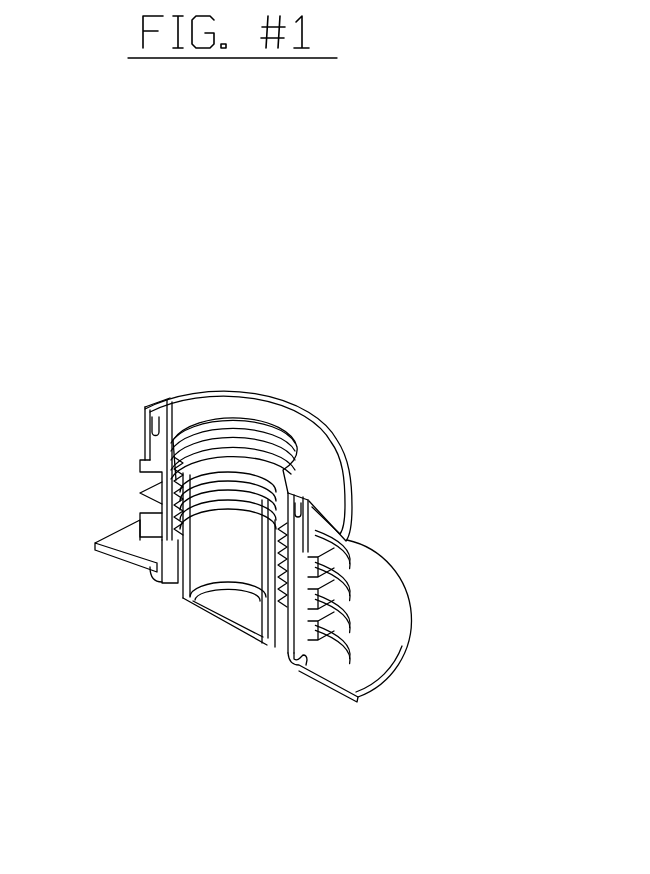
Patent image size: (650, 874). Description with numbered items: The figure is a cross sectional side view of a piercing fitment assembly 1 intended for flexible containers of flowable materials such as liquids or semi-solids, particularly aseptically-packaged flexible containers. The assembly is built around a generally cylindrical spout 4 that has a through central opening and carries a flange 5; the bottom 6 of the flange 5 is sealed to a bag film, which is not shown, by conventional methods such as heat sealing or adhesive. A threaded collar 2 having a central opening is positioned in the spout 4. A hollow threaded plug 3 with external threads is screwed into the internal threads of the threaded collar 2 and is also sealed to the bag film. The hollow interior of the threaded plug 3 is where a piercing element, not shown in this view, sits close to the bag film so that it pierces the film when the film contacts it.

The piercing fitment assembly 1 is at (373, 250).
The threaded collar 2 is at (452, 453).
The hollow threaded plug 3 is at (180, 490).
The spout 4 is at (150, 503).
The flange 5 is at (470, 597).
The bottom of flange 6 is at (427, 843).